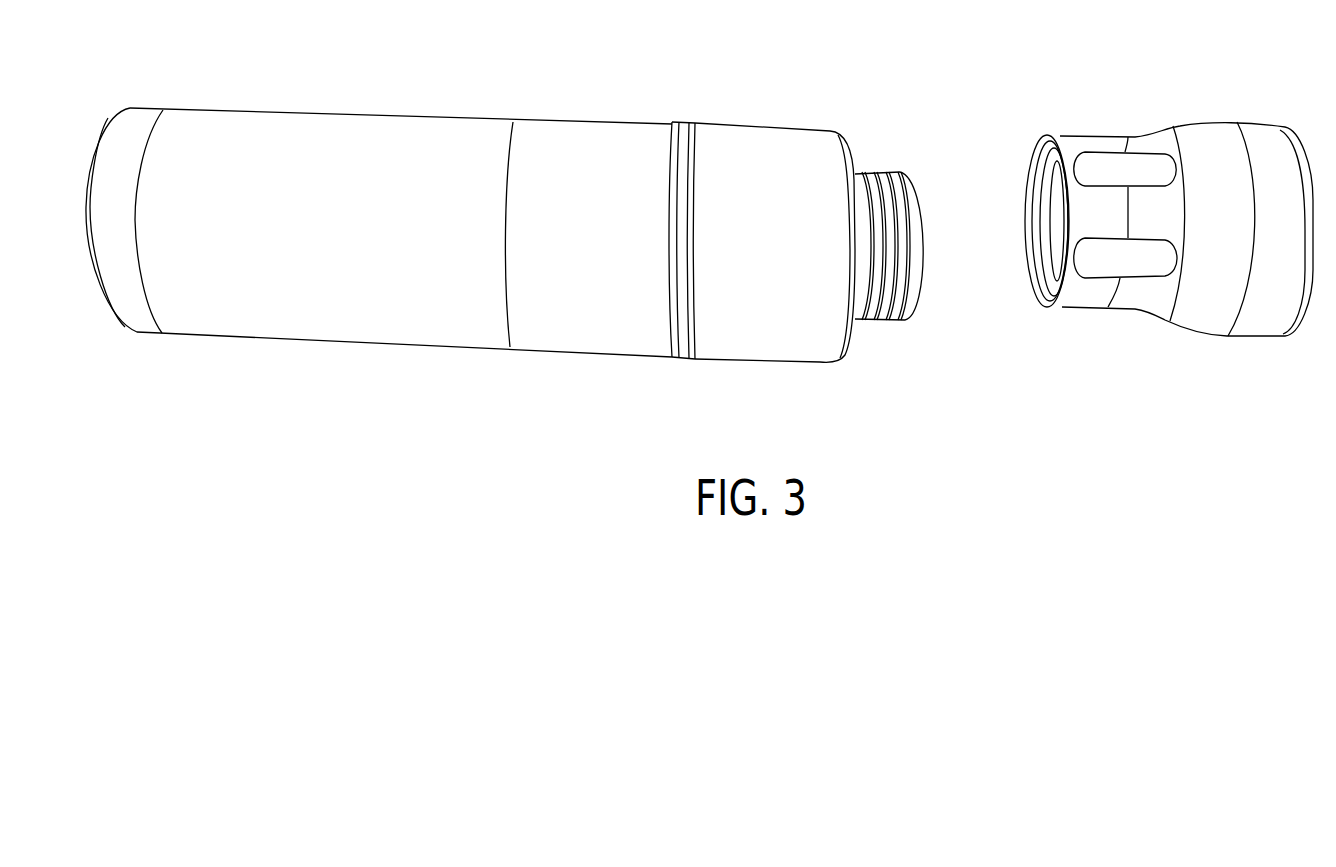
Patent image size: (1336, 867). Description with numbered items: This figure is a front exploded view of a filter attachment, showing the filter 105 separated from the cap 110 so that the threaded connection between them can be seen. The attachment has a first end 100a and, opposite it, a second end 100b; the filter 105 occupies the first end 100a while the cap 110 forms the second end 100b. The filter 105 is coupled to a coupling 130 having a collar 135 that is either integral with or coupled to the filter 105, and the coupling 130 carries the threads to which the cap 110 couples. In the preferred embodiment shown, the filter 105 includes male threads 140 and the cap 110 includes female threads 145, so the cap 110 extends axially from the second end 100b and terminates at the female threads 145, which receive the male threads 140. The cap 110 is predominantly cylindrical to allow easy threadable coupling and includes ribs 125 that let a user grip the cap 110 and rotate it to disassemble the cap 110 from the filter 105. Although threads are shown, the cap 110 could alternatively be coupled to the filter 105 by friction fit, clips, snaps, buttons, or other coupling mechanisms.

The first end 100a is at (123, 153).
The second end 100b is at (1142, 191).
The filter 105 is at (476, 122).
The cap 110 is at (1208, 120).
The ribs 125 is at (1103, 157).
The coupling 130 is at (793, 343).
The collar 135 is at (760, 130).
The male threads 140 is at (897, 318).
The female threads 145 is at (1045, 237).